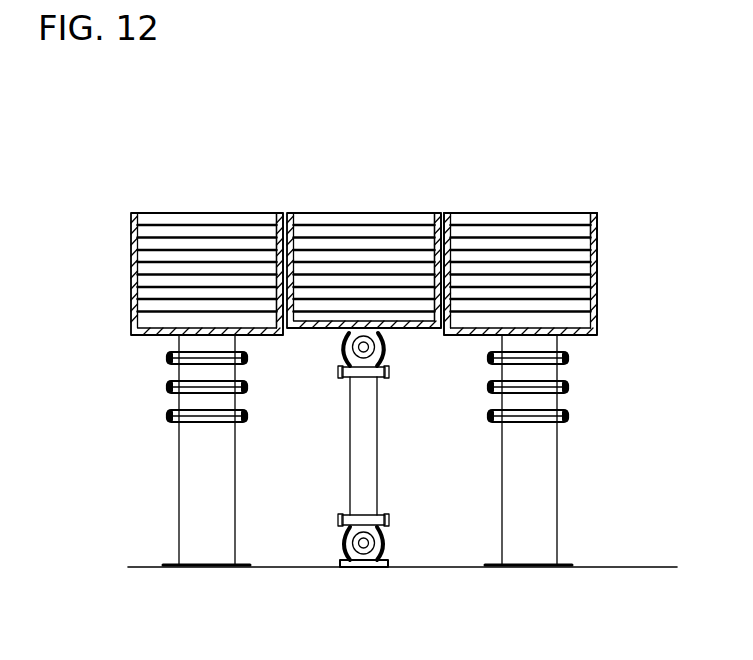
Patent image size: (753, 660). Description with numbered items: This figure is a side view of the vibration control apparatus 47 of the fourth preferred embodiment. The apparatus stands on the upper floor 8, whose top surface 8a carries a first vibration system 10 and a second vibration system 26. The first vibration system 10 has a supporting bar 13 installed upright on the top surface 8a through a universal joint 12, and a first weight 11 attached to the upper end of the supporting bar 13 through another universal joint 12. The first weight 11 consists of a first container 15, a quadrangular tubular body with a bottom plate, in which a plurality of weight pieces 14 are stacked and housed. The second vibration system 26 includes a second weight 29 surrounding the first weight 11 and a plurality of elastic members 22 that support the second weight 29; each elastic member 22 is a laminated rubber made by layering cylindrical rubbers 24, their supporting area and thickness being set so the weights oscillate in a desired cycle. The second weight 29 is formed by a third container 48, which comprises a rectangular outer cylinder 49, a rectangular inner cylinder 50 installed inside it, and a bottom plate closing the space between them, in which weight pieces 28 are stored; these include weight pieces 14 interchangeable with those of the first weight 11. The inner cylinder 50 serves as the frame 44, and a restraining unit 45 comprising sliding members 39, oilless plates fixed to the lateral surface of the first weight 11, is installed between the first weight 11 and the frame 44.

The upper floor 8 is at (416, 539).
The top surface of the upper floor 8a is at (623, 566).
The first vibration system 10 is at (364, 225).
The first weight 11 is at (394, 213).
The universal joint 12 is at (385, 347).
The supporting bar 13 is at (378, 447).
The weight pieces 14 is at (323, 236).
The first container 15 is at (436, 213).
The elastic members 22 is at (148, 404).
The rubbers 24 is at (173, 406).
The second vibration system 26 is at (606, 238).
The weight pieces 28 is at (572, 213).
The second weight 29 is at (563, 211).
The sliding members 39 is at (280, 213).
The frame 44 is at (247, 213).
The restraining unit 45 is at (215, 213).
The vibration control apparatus 47 is at (557, 160).
The third container 48 is at (602, 203).
The outer cylinder 49 is at (598, 223).
The inner cylinder 50 is at (447, 213).